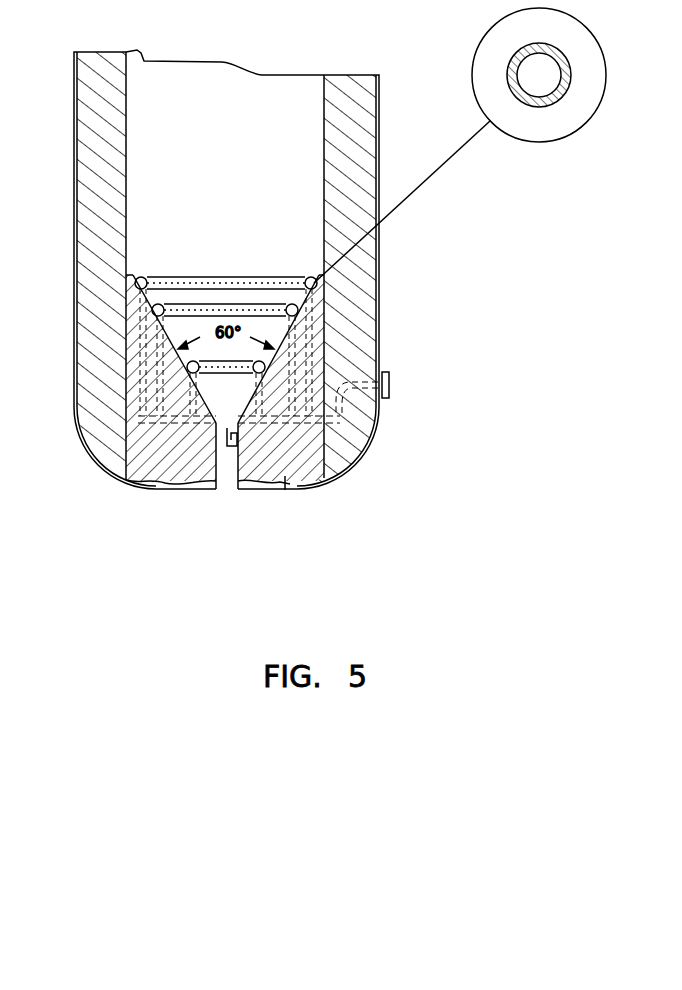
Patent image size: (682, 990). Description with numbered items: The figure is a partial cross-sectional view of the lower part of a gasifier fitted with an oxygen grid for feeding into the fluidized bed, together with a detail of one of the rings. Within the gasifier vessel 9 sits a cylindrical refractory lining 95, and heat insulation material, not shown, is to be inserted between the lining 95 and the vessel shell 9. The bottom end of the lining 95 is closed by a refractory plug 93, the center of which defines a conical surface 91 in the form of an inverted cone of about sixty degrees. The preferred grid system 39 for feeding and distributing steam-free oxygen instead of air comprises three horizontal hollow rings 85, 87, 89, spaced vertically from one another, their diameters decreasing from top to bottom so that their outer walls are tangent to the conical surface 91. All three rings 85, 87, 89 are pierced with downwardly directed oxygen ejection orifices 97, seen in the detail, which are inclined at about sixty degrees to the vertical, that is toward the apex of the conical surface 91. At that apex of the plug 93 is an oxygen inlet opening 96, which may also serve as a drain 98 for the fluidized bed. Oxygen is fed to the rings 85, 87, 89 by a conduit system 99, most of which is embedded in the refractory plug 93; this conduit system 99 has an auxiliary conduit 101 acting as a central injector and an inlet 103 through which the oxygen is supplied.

In FIG. 5, the gasifier vessel 9 is at (255, 269).
In FIG. 5, the cylindrical refractory lining 95 is at (353, 182).
In FIG. 5, the grid system 39 is at (226, 286).
In FIG. 5, the conical surface 91 is at (158, 330).
In FIG. 5, the horizontal hollow ring 85 is at (235, 277).
In FIG. 5a, the horizontal hollow ring 85 is at (568, 52).
In FIG. 5, the horizontal hollow ring 87 is at (263, 303).
In FIG. 5, the horizontal hollow ring 89 is at (222, 367).
In FIG. 5, the refractory plug 93 is at (318, 337).
In FIG. 5, the conduit system 99 is at (125, 358).
In FIG. 5, the oxygen inlet opening 96 is at (234, 416).
In FIG. 5, the drain 98 is at (220, 483).
In FIG. 5, the auxiliary conduit 101 is at (235, 446).
In FIG. 5, the inlet 103 is at (390, 378).
In FIG. 5a, the oxygen ejection orifices 97 is at (518, 95).